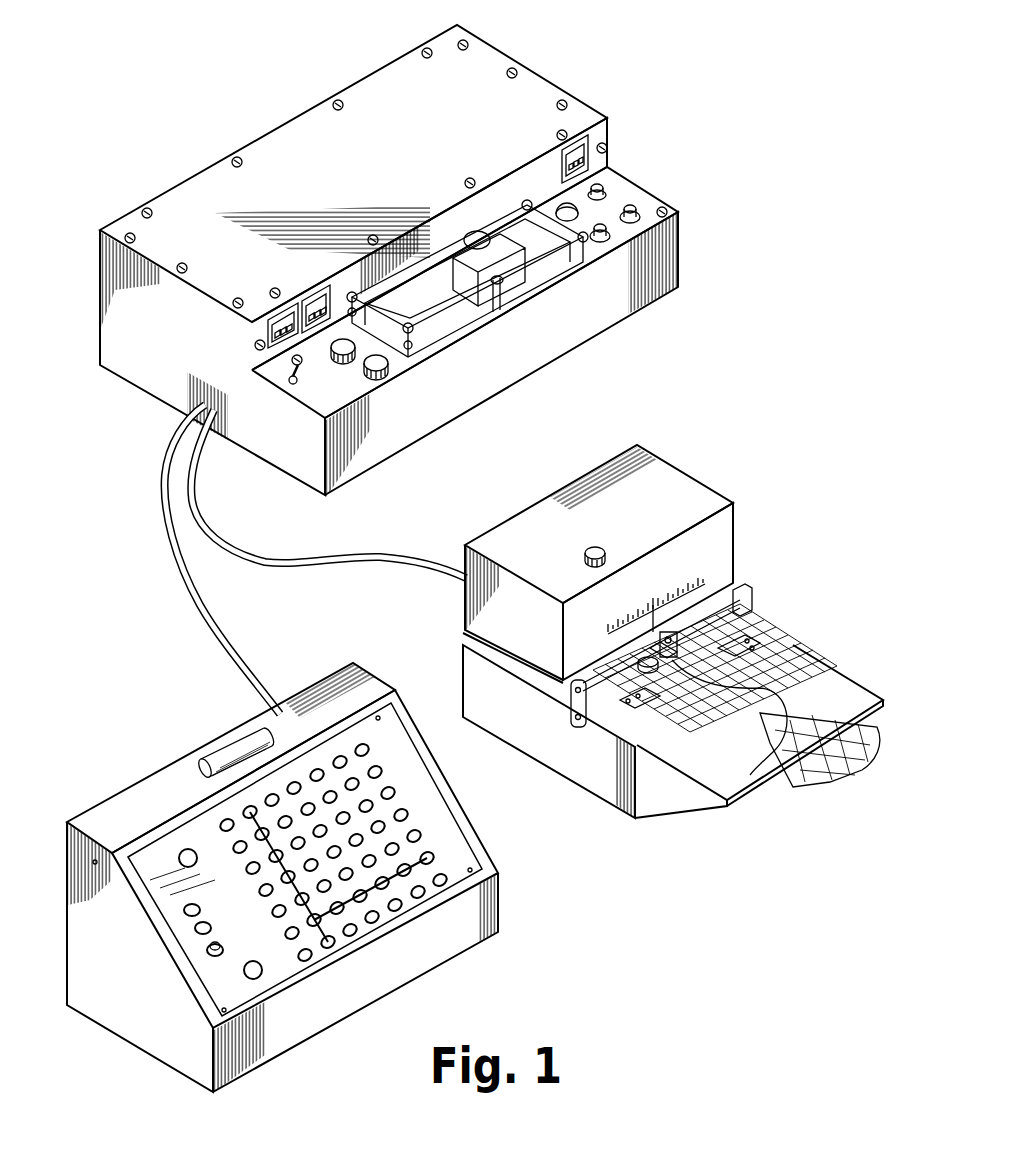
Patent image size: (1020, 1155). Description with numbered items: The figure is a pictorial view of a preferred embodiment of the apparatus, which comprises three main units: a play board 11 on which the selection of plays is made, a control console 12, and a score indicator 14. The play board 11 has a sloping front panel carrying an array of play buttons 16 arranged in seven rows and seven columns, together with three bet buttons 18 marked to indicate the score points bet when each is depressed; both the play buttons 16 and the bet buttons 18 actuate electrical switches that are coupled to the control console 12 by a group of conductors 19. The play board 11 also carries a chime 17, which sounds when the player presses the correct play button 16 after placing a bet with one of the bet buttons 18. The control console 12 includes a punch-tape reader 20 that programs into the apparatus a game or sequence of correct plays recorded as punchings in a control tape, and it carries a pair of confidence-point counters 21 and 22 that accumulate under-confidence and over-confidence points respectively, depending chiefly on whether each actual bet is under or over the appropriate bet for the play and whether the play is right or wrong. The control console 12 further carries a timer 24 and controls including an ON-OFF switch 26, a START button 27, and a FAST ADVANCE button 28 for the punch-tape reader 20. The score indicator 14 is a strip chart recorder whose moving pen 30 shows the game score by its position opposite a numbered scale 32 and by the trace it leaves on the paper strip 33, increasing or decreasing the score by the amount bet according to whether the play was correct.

The play board 11 is at (373, 968).
The control console 12 is at (480, 372).
The score indicator 14 is at (680, 492).
The play buttons 16 is at (422, 833).
The chime 17 is at (236, 752).
The bet buttons 18 is at (208, 956).
The conductors 19 is at (190, 590).
The punch-tape reader 20 is at (527, 289).
The confidence-point counter 21 is at (270, 333).
The confidence-point counter 22 is at (322, 305).
The timer 24 is at (582, 158).
The ON-OFF switch 26 is at (293, 385).
The START button 27 is at (633, 210).
The FAST ADVANCE button 28 is at (602, 244).
The moving pen 30 is at (672, 668).
The numbered scale 32 is at (705, 578).
The paper strip 33 is at (815, 780).